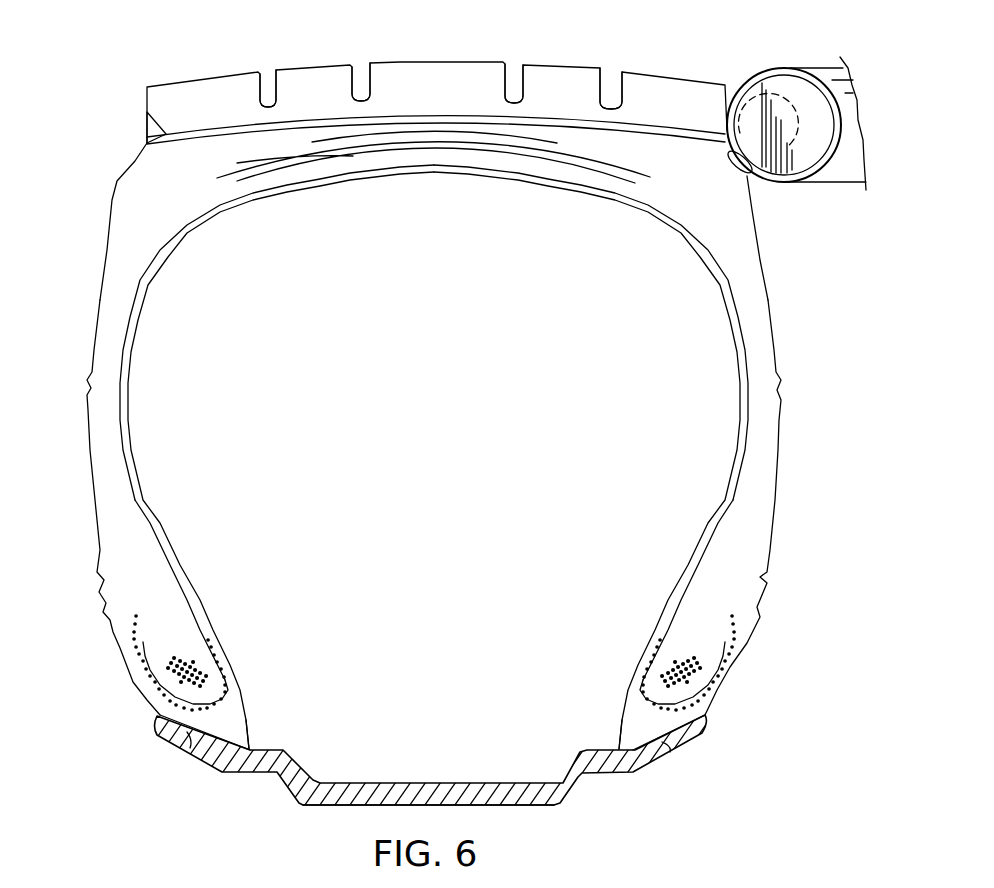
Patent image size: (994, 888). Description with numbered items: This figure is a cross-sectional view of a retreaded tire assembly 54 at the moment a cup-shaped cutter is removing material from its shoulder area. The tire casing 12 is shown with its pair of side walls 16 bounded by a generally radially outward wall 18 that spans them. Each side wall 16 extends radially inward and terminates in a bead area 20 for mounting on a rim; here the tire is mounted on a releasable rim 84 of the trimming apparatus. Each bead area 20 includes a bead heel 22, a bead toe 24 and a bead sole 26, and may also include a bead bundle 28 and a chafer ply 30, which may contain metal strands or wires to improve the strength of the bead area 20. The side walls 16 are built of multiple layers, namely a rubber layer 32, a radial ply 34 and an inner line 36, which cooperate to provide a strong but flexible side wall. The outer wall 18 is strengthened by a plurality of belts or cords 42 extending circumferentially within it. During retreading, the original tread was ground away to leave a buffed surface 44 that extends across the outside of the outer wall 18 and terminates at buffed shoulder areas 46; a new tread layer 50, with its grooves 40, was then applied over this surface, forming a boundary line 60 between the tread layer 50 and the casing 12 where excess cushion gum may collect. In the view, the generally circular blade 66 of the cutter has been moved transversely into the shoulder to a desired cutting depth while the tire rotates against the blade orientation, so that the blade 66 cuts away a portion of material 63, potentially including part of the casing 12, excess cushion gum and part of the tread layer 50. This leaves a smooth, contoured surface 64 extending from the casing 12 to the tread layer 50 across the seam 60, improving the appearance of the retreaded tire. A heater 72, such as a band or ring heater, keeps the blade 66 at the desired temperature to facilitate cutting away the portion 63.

The tire casing 12 is at (784, 294).
The side walls 16 is at (766, 417).
The radially outward wall 18 is at (430, 453).
The bead area 20 is at (702, 638).
The bead heel 22 is at (707, 717).
The bead toe 24 is at (617, 747).
The bead sole 26 is at (657, 745).
The bead bundle 28 is at (650, 680).
The chafer ply 30 is at (660, 642).
The rubber layer 32 is at (753, 343).
The radial ply 34 is at (750, 397).
The inner line 36 is at (717, 495).
The grooves 40 is at (362, 64).
The belts or cords 42 is at (333, 160).
The buffed surface 44 is at (350, 118).
The buffed shoulder areas 46 is at (758, 208).
The tread layer 50 is at (158, 133).
The retreaded tire assembly 54 is at (77, 365).
The boundary line 60 is at (553, 87).
The portion of material 63 is at (780, 67).
The contoured surface 64 is at (747, 170).
The blade 66 is at (747, 78).
The heater 72 is at (838, 173).
The releasable rim 84 is at (567, 790).